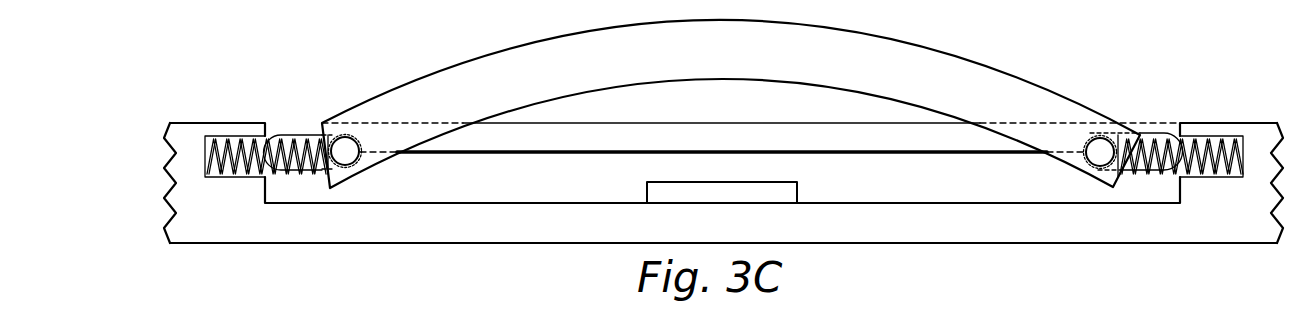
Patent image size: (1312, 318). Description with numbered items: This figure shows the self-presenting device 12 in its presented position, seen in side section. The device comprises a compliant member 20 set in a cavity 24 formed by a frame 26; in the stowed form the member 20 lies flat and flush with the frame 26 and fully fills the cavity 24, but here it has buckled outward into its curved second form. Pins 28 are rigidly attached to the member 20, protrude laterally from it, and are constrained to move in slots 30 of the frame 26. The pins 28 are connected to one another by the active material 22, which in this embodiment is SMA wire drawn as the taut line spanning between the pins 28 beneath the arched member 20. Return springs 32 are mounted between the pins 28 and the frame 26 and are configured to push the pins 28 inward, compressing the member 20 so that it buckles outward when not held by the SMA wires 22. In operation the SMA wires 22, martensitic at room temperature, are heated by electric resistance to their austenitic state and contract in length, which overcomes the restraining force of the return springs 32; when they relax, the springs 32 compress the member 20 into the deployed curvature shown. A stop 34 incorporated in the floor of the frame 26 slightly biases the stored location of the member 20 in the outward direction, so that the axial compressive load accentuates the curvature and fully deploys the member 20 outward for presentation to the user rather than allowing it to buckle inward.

The self-presenting device 12 is at (140, 150).
The member 20 is at (947, 70).
The active material 22 is at (512, 152).
The cavity 24 is at (975, 178).
The frame 26 is at (380, 230).
The pins 28 is at (1098, 150).
The slots 30 is at (322, 138).
The return springs 32 is at (1165, 137).
The stop 34 is at (797, 192).